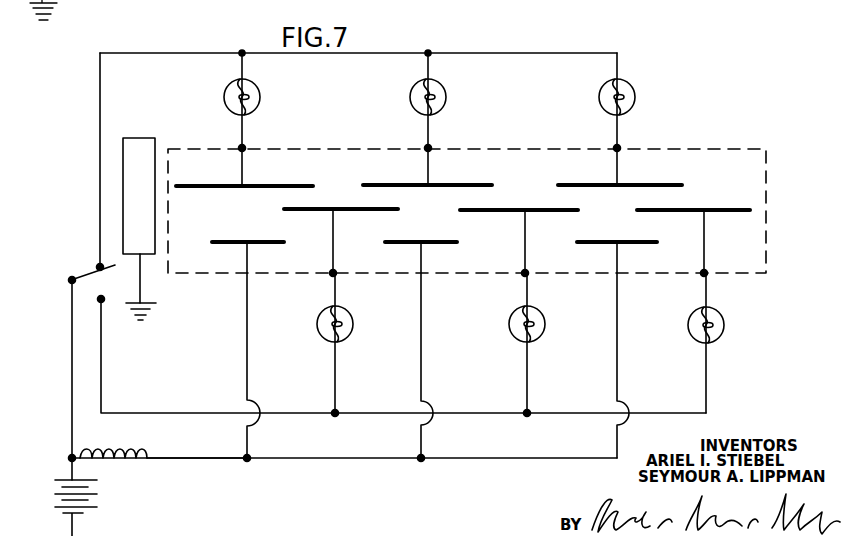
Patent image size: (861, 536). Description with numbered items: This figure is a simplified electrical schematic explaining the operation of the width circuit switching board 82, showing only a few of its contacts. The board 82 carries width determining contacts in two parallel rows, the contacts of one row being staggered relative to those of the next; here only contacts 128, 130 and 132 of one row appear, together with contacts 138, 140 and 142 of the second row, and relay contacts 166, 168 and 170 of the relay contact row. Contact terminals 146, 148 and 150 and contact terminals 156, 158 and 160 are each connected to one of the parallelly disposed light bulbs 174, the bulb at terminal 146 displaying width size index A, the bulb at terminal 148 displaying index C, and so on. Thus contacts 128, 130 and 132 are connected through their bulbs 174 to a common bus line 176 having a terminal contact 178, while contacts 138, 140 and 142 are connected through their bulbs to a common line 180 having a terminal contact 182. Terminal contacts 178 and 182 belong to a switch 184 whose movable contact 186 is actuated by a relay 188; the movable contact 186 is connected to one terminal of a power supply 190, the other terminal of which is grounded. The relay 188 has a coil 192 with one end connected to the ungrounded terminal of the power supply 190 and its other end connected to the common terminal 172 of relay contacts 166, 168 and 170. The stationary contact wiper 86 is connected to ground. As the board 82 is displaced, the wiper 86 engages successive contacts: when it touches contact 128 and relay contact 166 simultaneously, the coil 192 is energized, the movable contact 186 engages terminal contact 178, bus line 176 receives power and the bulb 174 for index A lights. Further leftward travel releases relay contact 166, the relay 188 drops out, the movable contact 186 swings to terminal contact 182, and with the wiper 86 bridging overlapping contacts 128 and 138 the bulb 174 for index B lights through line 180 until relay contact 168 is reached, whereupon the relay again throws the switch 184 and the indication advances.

The width circuit switching board 82 is at (745, 146).
The stationary contact wiper 86 is at (143, 140).
The contact 128 is at (270, 184).
The contact 130 is at (450, 165).
The contact 132 is at (660, 165).
The contact 138 is at (310, 208).
The contact 140 is at (495, 208).
The contact 142 is at (693, 208).
The contact terminal 146 is at (256, 147).
The contact terminal 148 is at (432, 147).
The contact terminal 150 is at (620, 147).
The contact terminal 156 is at (338, 276).
The contact terminal 158 is at (530, 276).
The contact terminal 160 is at (710, 277).
The relay contact 166 is at (241, 241).
The relay contact 168 is at (400, 243).
The relay contact 170 is at (604, 244).
The common terminal 172 is at (245, 460).
The light bulb 174 is at (262, 88).
The common bus line 176 is at (487, 55).
The terminal contact 178 is at (99, 266).
The common line 180 is at (458, 416).
The terminal contact 182 is at (103, 300).
The switch 184 is at (97, 270).
The movable contact 186 is at (95, 268).
The relay 188 is at (115, 471).
The power supply 190 is at (62, 480).
The coil 192 is at (135, 450).